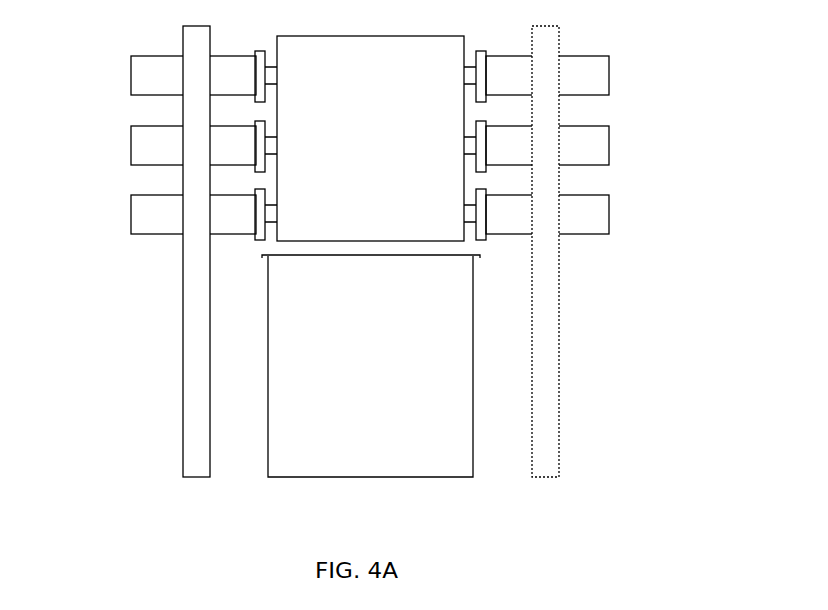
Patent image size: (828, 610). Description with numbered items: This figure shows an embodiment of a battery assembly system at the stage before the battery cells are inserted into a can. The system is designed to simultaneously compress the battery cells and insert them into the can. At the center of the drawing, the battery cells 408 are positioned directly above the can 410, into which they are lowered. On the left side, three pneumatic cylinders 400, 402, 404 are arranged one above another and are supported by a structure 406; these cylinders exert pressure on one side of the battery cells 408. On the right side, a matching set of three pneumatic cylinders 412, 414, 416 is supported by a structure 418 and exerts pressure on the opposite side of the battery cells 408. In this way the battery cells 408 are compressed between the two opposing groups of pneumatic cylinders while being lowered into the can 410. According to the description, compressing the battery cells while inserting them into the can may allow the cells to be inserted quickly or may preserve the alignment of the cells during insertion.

The pneumatic cylinder 400 is at (134, 83).
The pneumatic cylinder 402 is at (134, 148).
The pneumatic cylinder 404 is at (134, 223).
The structure 406 is at (182, 338).
The battery cells 408 is at (392, 158).
The can 410 is at (400, 383).
The pneumatic cylinder 412 is at (612, 83).
The pneumatic cylinder 414 is at (612, 153).
The pneumatic cylinder 416 is at (612, 222).
The structure 418 is at (560, 402).